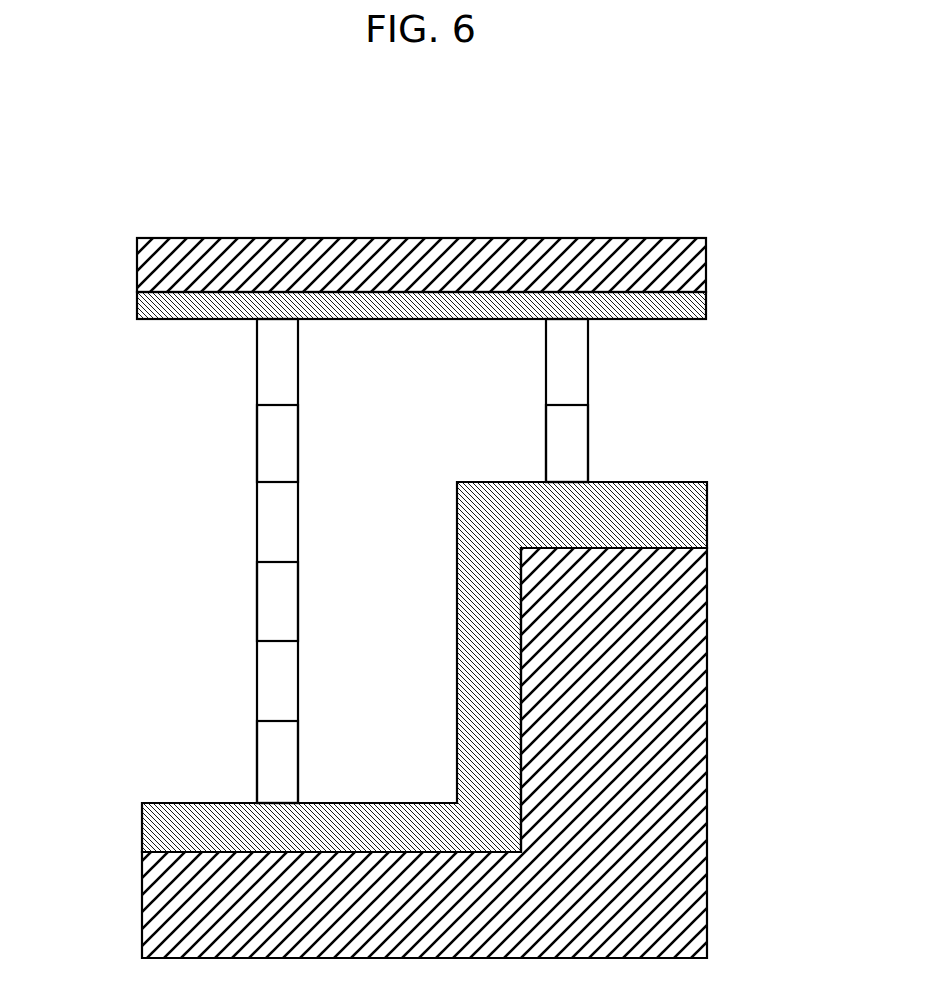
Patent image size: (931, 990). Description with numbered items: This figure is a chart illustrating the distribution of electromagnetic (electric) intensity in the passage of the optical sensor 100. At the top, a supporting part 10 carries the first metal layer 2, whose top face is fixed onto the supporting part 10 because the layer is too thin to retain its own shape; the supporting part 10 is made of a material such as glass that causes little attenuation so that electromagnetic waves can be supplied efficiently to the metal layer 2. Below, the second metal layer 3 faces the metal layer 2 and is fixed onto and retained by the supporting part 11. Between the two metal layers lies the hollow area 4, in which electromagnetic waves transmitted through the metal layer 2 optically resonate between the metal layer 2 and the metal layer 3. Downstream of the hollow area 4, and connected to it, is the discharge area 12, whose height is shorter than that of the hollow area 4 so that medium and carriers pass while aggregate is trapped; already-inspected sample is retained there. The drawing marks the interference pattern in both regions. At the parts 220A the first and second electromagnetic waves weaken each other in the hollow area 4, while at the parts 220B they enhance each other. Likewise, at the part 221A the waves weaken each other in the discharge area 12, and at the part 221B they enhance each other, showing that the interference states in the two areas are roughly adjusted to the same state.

The optical sensor 100 is at (733, 145).
The supporting part 10 is at (690, 268).
The first metal layer 2 is at (685, 308).
The hollow area 4 is at (137, 383).
The part 220A is at (257, 803).
The part 220B is at (298, 720).
The discharge area 12 is at (687, 372).
The part 221A is at (546, 481).
The part 221B is at (588, 405).
The second metal layer 3 is at (687, 522).
The supporting part 11 is at (687, 781).